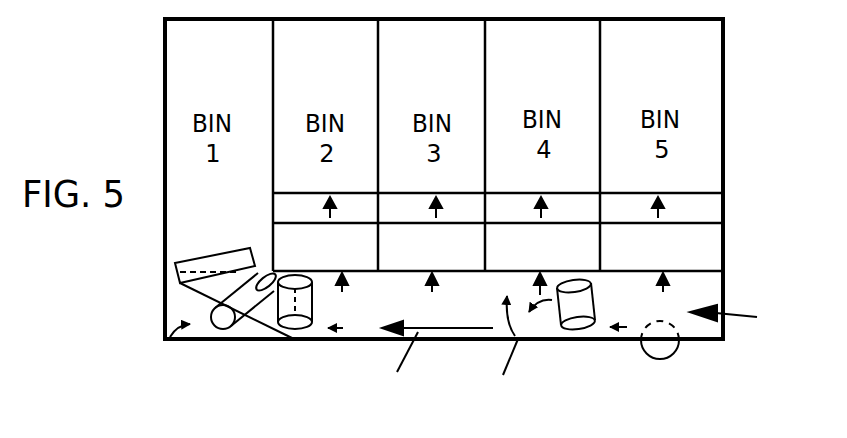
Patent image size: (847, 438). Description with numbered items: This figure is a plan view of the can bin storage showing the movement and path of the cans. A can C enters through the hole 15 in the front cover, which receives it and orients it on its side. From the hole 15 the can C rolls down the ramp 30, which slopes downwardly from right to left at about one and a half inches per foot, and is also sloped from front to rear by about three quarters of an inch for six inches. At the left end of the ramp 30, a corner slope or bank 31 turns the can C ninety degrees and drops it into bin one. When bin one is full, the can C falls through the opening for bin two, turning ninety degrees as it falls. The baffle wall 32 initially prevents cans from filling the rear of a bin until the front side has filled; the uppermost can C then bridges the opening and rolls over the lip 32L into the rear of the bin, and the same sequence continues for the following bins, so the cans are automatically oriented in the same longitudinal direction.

The hole 15 is at (677, 352).
The ramp 30 is at (707, 285).
The corner slope or bank 31 is at (182, 307).
The baffle wall 32 is at (707, 225).
The lip 32L is at (697, 203).
The can C is at (180, 272).